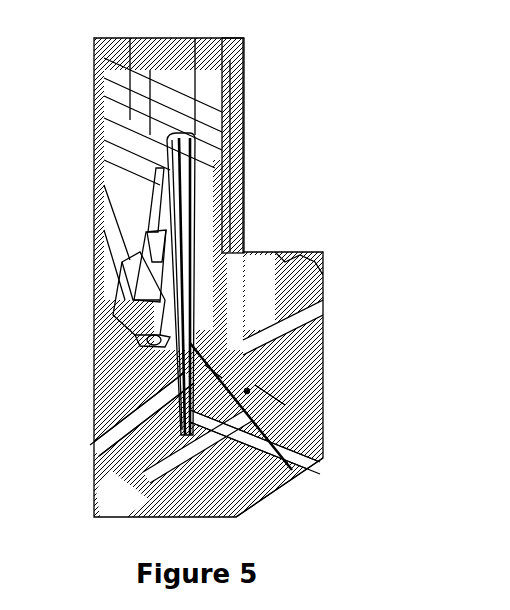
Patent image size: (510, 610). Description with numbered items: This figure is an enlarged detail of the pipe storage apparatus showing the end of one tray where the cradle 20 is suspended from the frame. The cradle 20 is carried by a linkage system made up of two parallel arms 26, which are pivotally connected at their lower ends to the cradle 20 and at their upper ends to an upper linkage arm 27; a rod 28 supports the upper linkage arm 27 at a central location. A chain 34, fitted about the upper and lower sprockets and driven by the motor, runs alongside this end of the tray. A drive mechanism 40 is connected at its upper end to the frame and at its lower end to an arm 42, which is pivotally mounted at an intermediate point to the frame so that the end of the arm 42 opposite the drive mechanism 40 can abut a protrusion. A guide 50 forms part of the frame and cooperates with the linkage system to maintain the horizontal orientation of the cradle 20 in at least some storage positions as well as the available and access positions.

The cradle 20 is at (283, 470).
The parallel arms 26 is at (247, 391).
The upper linkage arm 27 is at (212, 371).
The rod 28 is at (140, 397).
The chain 34 is at (232, 188).
The drive mechanism 40 is at (128, 302).
The arm 42 is at (268, 395).
The guide 50 is at (182, 266).